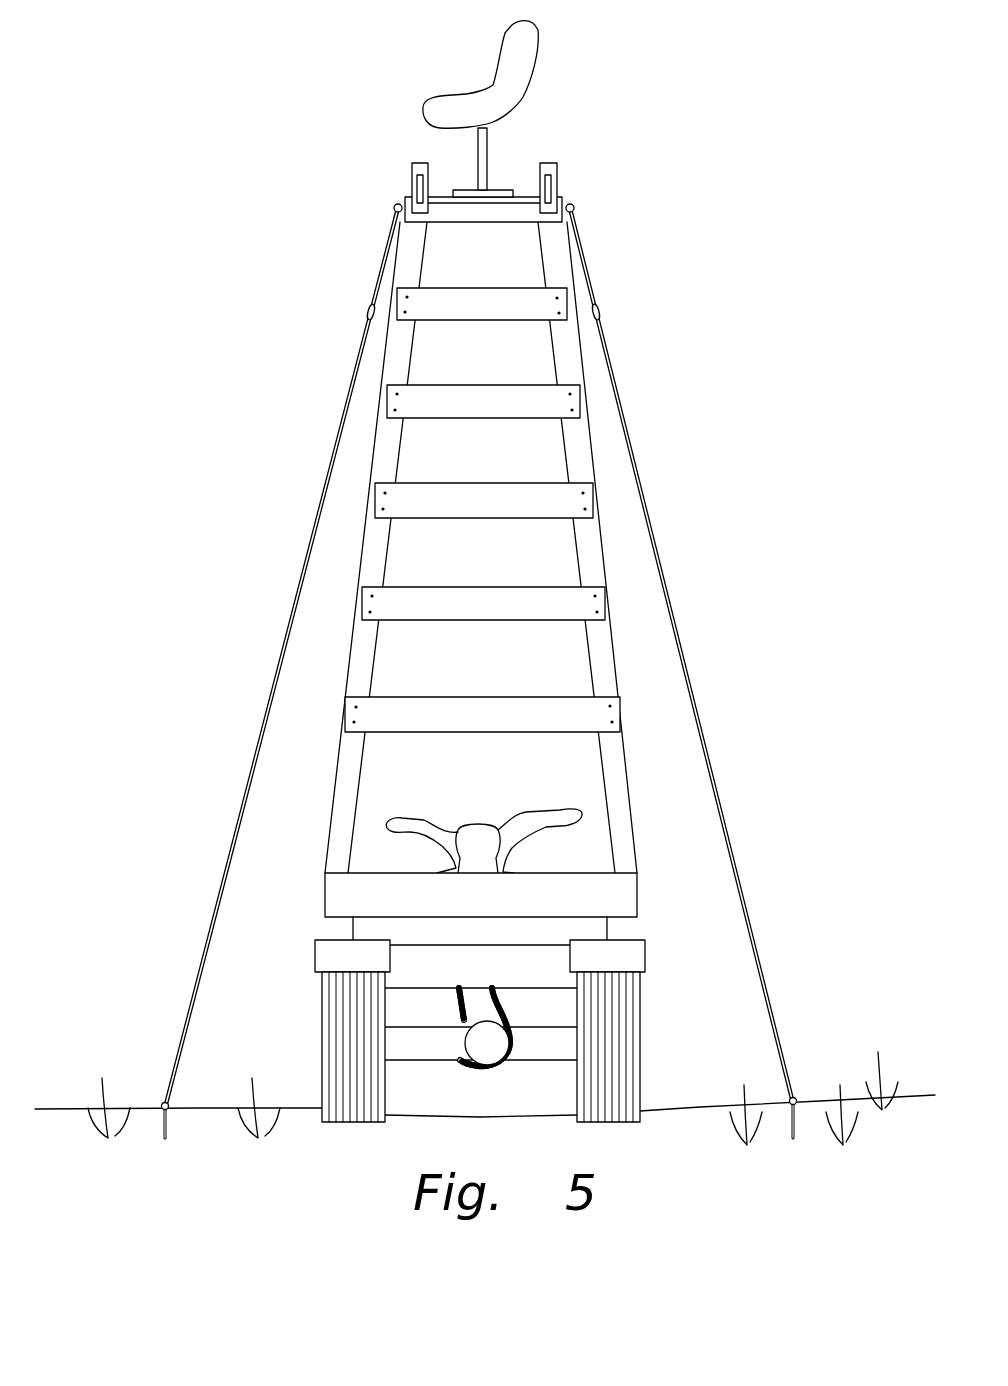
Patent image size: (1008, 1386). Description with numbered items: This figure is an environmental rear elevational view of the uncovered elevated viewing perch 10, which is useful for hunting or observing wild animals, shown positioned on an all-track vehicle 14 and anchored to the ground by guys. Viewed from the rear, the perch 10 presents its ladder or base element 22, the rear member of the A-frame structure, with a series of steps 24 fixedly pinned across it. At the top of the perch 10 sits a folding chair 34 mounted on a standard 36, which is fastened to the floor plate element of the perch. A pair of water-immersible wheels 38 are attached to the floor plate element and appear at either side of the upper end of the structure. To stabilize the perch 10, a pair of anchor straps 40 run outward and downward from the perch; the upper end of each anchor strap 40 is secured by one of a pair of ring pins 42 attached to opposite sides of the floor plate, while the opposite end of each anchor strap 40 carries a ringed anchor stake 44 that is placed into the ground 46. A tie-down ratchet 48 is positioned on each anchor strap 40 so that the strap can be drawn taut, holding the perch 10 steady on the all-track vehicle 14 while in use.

The elevated viewing perch 10 is at (224, 231).
The all-track vehicle 14 is at (483, 826).
The ladder or base element 22 is at (534, 453).
The steps 24 is at (498, 600).
The folding chair 34 is at (492, 80).
The standard 36 is at (487, 177).
The water-immersible wheels 38 is at (412, 172).
The anchor straps 40 is at (277, 663).
The ring pins 42 is at (394, 207).
The ringed anchor stakes 44 is at (164, 1105).
The ground 46 is at (250, 1185).
The tie-down ratchet 48 is at (366, 312).